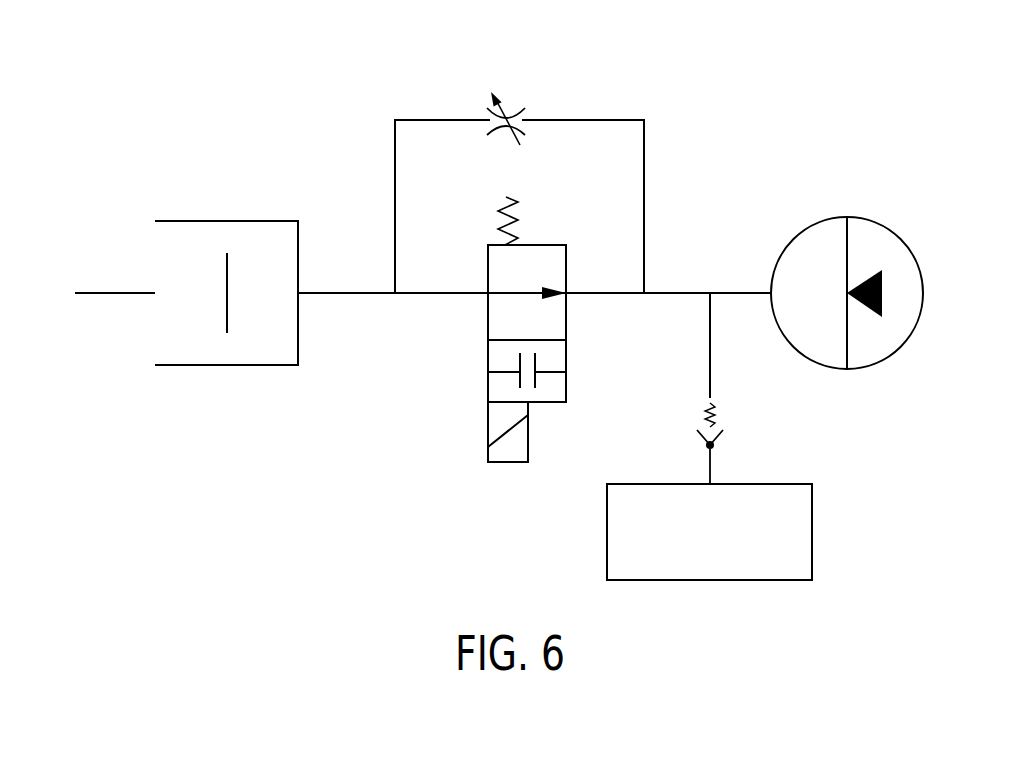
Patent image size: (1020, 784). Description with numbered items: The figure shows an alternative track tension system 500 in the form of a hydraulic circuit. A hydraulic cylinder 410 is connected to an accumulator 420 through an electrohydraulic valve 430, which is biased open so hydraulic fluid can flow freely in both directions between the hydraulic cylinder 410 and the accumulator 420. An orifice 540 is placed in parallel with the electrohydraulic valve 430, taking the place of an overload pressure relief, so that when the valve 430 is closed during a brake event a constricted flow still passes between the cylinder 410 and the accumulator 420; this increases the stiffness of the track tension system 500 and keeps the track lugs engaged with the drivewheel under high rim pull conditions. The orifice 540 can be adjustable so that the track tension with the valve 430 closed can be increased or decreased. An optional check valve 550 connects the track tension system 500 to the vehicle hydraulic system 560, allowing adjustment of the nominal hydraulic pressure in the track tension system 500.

The track tension system 500 is at (748, 96).
The hydraulic cylinder 410 is at (237, 221).
The electrohydraulic valve 430 is at (488, 335).
The orifice 540 is at (513, 110).
The accumulator 420 is at (840, 217).
The check valve 550 is at (718, 444).
The vehicle hydraulic system 560 is at (813, 523).